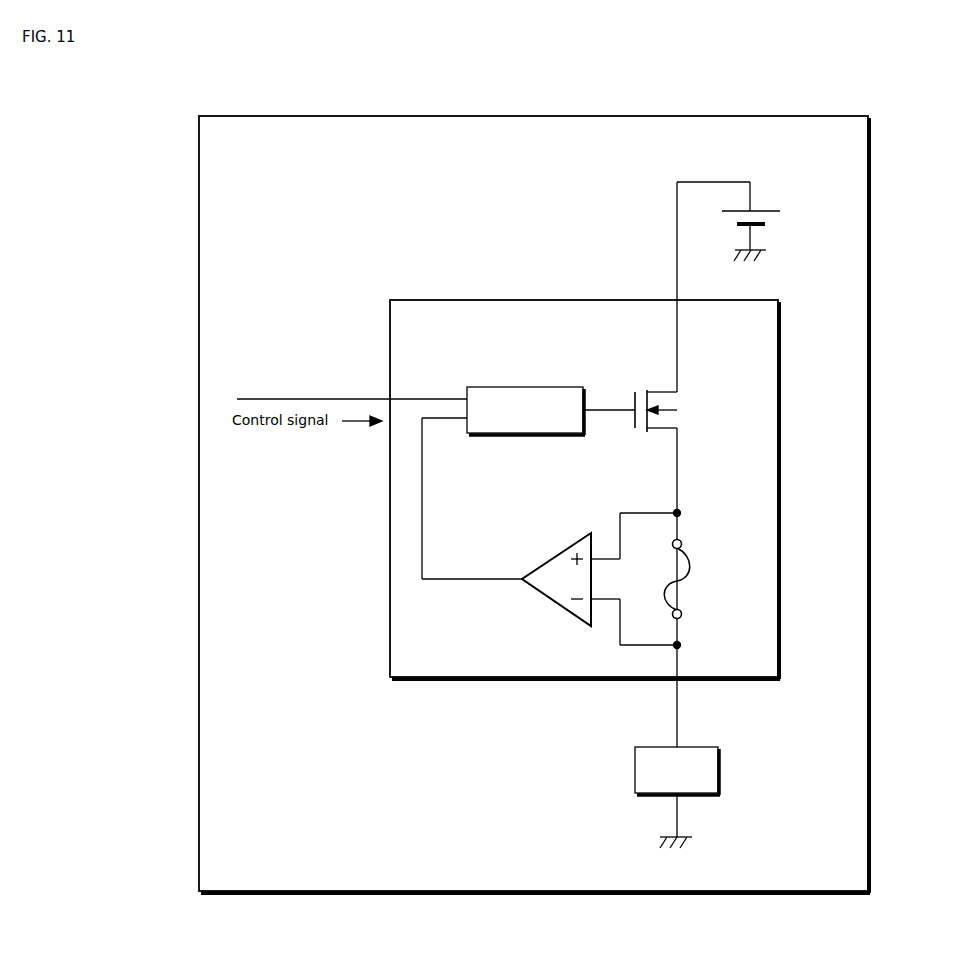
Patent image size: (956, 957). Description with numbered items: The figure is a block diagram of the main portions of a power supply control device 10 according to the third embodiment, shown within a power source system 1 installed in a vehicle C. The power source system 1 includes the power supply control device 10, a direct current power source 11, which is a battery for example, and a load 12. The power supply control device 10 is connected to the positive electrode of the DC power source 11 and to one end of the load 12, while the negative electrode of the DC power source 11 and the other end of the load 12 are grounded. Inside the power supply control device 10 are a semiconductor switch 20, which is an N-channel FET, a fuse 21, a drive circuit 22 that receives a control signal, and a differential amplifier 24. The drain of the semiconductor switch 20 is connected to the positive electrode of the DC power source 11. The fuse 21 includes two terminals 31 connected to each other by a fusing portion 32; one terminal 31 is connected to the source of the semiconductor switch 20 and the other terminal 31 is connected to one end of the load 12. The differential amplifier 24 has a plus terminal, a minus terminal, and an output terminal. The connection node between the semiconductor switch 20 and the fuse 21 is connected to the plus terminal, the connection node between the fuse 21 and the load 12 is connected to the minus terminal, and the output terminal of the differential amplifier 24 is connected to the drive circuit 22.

The vehicle C is at (258, 116).
The power source system 1 is at (424, 222).
The power supply control device 10 is at (438, 300).
The direct current (DC) power source 11 is at (765, 206).
The load 12 is at (700, 745).
The semiconductor switch 20 is at (681, 410).
The fuse 21 is at (726, 530).
The drive circuit 22 is at (570, 378).
The differential amplifier 24 is at (557, 552).
The terminal 31 is at (681, 540).
The fusing portion 32 is at (690, 577).